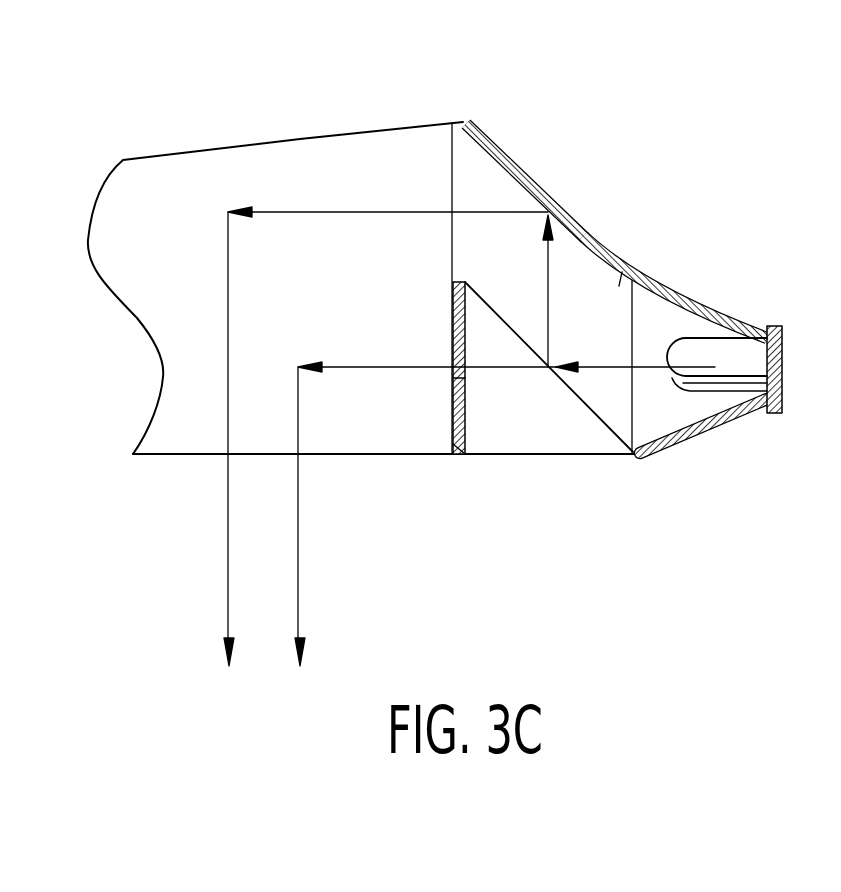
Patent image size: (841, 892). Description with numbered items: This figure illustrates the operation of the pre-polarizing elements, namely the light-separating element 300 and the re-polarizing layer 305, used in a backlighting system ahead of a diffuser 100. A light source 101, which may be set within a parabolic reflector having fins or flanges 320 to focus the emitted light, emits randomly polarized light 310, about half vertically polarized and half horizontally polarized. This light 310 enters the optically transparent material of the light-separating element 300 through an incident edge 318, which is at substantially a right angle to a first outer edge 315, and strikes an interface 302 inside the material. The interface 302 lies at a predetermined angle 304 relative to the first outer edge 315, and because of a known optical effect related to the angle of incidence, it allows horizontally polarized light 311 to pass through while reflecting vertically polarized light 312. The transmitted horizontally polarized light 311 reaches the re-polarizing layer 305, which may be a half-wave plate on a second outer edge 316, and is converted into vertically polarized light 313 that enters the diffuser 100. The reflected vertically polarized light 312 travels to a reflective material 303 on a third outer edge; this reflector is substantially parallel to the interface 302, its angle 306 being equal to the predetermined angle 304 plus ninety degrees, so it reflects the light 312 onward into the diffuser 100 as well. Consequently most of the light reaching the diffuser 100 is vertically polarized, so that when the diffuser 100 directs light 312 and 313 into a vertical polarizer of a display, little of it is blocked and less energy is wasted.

The diffuser 100 is at (308, 139).
The light source 101 is at (733, 365).
The light-separating element 300 is at (570, 518).
The interface 302 is at (570, 392).
The reflective material 303 is at (510, 160).
The predetermined angle 304 is at (601, 456).
The re-polarizing layer 305 is at (453, 456).
The angle 306 is at (628, 317).
The randomly polarized light 310 is at (603, 367).
The horizontally polarized light 311 is at (491, 366).
The vertically polarized light 312 is at (548, 290).
The vertically polarized light 313 is at (390, 370).
The first outer edge 315 is at (522, 456).
The second outer edge 316 is at (466, 384).
The incident edge 318 is at (637, 343).
The fins or flanges 320 is at (693, 300).